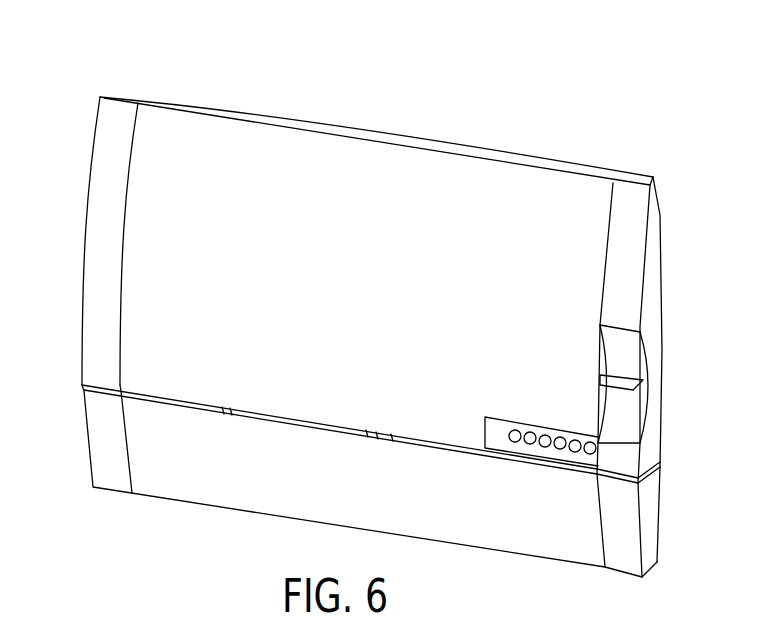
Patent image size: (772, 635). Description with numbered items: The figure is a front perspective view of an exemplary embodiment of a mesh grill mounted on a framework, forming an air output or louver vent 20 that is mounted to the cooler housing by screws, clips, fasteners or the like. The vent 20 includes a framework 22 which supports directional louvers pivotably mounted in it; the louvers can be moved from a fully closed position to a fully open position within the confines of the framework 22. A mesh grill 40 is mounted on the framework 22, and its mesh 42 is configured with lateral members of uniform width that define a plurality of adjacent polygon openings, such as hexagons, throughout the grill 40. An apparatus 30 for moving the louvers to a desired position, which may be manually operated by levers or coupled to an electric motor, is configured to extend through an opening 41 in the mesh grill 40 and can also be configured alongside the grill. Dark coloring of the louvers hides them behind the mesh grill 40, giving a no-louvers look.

The air output or louver vent 20 is at (380, 302).
The framework 22 is at (632, 218).
The apparatus to move the louvers 30 is at (623, 388).
The mesh grill 40 is at (377, 163).
The opening 41 is at (147, 400).
The mesh 42 is at (283, 138).